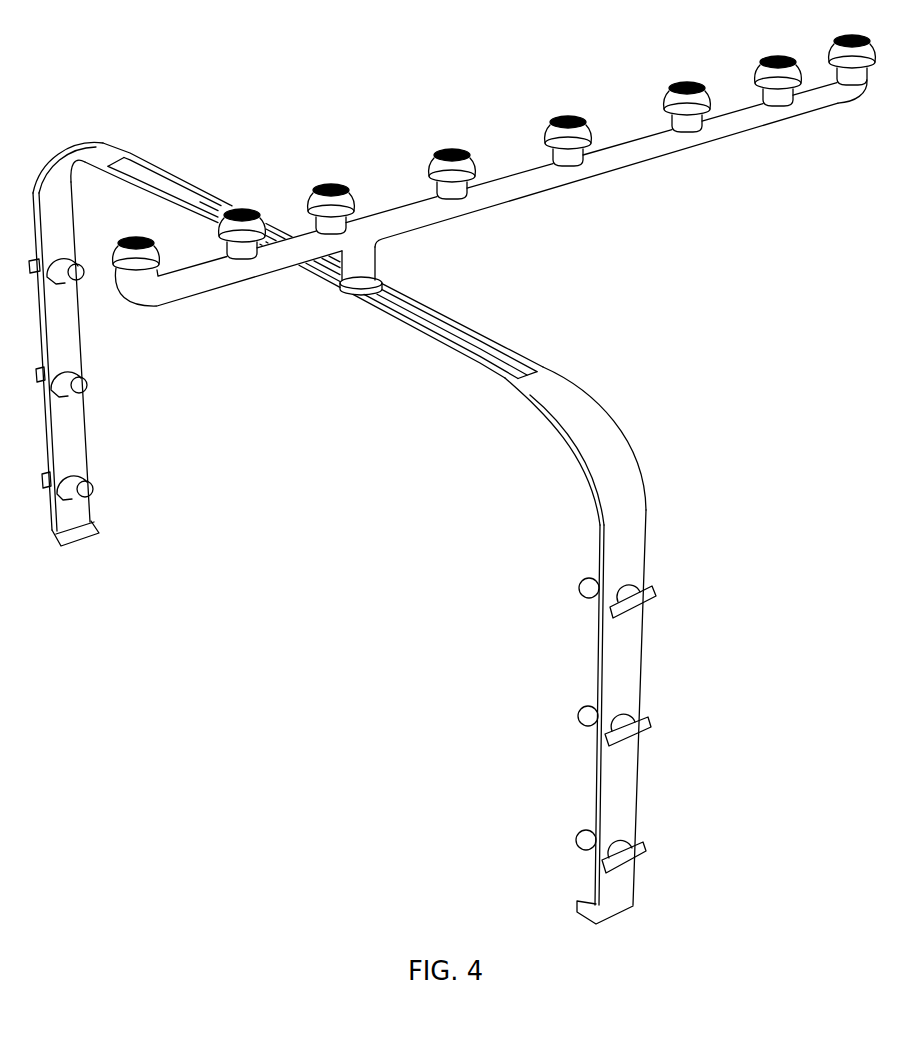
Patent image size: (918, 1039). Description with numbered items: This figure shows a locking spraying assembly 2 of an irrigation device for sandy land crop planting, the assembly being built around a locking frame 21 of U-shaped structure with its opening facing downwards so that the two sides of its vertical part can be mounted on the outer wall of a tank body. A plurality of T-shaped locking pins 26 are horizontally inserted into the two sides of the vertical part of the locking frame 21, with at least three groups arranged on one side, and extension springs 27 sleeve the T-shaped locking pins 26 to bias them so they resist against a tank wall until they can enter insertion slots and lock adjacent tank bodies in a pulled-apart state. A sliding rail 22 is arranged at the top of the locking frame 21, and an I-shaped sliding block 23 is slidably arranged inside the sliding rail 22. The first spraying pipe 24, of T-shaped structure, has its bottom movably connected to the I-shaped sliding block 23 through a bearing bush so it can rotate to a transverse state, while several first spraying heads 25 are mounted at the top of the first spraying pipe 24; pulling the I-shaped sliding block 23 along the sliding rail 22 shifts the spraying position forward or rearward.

The locking spraying assembly 2 is at (341, 104).
The locking frame 21 is at (622, 515).
The sliding rail 22 is at (490, 365).
The I-shaped sliding block 23 is at (377, 288).
The first spraying pipe 24 is at (528, 178).
The first spraying head 25 is at (680, 102).
The T-shaped locking pin 26 is at (78, 276).
The extension spring 27 is at (63, 393).